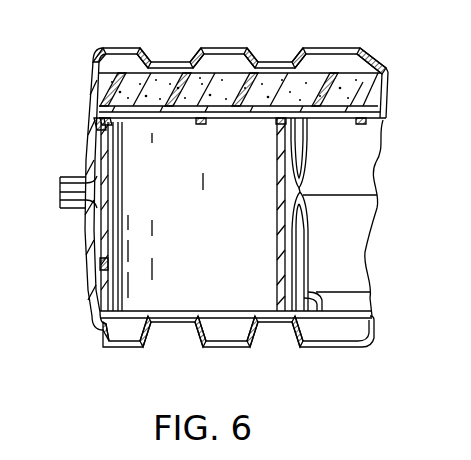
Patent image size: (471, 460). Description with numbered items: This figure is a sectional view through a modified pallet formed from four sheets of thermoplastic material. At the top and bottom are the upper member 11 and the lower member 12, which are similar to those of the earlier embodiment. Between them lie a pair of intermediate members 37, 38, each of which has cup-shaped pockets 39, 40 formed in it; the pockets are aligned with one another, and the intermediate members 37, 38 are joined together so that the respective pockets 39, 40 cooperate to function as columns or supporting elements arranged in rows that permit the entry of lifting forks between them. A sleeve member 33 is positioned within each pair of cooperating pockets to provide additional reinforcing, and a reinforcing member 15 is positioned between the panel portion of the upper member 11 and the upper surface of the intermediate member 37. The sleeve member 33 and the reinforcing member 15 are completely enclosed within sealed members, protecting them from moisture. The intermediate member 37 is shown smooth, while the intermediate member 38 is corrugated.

The upper member 11 is at (97, 52).
The lower member 12 is at (96, 340).
The reinforcing member 15 is at (370, 97).
The sleeve member 33 is at (114, 198).
The intermediate member 37 is at (374, 164).
The intermediate member 38 is at (372, 312).
The cup-shaped pocket 39 is at (97, 153).
The cup-shaped pocket 40 is at (96, 261).